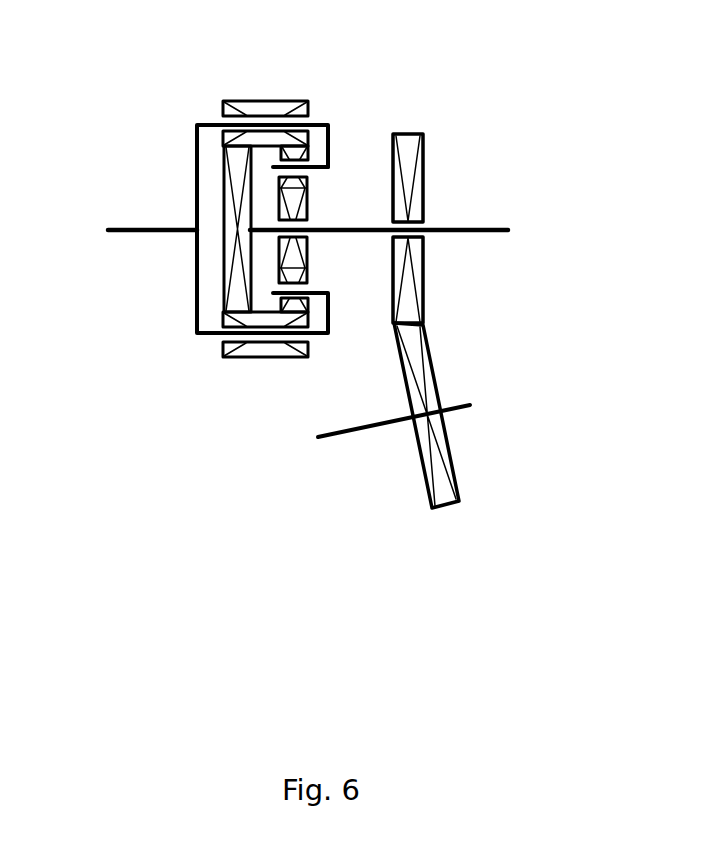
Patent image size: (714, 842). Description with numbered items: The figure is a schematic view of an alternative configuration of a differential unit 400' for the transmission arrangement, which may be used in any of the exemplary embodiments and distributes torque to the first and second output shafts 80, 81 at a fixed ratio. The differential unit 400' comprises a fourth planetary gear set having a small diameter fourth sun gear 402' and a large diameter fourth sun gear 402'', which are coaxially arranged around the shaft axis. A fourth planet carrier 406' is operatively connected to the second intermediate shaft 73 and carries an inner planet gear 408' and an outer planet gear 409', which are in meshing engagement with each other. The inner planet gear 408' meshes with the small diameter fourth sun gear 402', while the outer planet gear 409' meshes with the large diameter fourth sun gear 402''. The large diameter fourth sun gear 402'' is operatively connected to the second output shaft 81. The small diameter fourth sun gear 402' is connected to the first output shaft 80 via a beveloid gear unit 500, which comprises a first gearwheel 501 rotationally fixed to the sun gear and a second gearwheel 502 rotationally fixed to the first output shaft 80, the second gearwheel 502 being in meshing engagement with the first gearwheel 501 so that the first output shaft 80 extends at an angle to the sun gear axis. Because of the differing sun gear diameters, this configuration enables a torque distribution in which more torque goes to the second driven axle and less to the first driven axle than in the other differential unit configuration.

The second intermediate shaft 73 is at (140, 232).
The second output shaft 81 is at (493, 233).
The first output shaft 80 is at (361, 432).
The differential unit 400' is at (227, 457).
The small diameter fourth sun gear 402' is at (335, 230).
The large diameter fourth sun gear 402'' is at (166, 229).
The fourth planet carrier 406' is at (192, 216).
The inner planet gear 408' is at (351, 196).
The outer planet gear 409' is at (254, 195).
The beveloid gear unit 500 is at (454, 531).
The first gearwheel 501 is at (423, 179).
The second gearwheel 502 is at (453, 470).